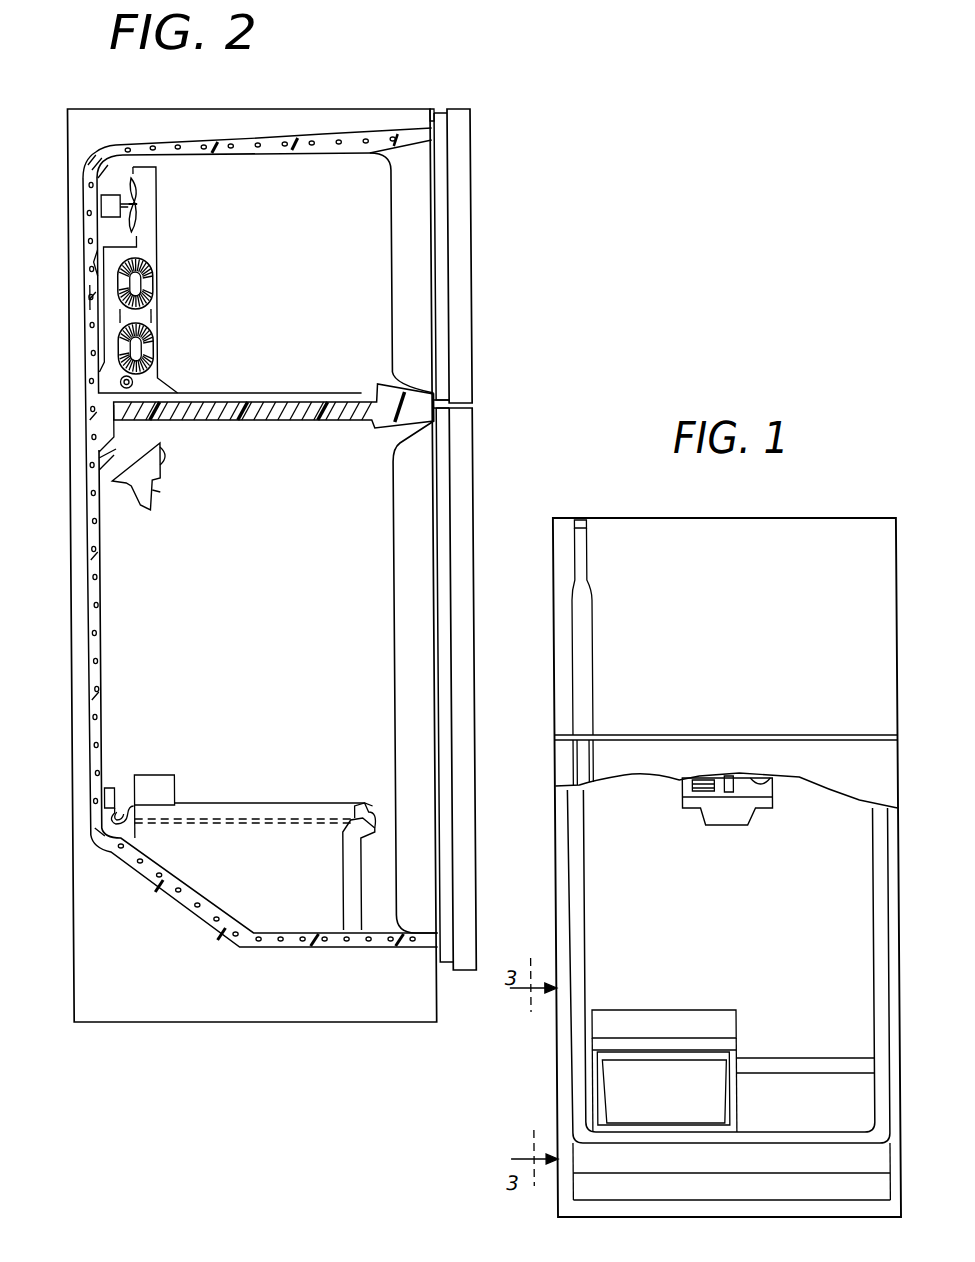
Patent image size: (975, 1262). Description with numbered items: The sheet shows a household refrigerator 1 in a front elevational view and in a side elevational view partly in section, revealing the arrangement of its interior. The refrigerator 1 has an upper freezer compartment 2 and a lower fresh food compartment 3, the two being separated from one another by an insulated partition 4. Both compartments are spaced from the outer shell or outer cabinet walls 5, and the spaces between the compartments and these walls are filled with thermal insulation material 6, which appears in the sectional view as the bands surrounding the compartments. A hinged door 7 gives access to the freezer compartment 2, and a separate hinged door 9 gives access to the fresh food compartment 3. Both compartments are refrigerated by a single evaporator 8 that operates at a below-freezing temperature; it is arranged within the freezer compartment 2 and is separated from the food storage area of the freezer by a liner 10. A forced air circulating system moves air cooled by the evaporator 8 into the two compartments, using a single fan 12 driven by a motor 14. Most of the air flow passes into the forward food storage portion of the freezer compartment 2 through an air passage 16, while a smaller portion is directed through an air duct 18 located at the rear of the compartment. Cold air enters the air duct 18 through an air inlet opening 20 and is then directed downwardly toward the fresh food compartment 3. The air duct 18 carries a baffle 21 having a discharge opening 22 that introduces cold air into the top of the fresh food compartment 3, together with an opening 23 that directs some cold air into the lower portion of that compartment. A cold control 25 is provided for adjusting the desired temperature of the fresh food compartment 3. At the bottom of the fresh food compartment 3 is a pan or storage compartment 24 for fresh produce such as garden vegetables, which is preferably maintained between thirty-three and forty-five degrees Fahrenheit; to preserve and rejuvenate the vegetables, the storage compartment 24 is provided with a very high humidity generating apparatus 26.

In FIG. 2, the household refrigerator 1 is at (374, 84).
In FIG. 1, the household refrigerator 1 is at (668, 508).
In FIG. 2, the freezer compartment 2 is at (292, 280).
In FIG. 2, the fresh food compartment 3 is at (277, 635).
In FIG. 1, the fresh food compartment 3 is at (734, 925).
In FIG. 2, the insulated partition 4 is at (290, 422).
In FIG. 2, the outer cabinet walls 5 is at (68, 402).
In FIG. 1, the outer cabinet walls 5 is at (559, 1068).
In FIG. 2, the thermal insulation material 6 is at (95, 540).
In FIG. 2, the hinged door 7 is at (473, 262).
In FIG. 1, the hinged door 7 is at (758, 535).
In FIG. 2, the evaporator 8 is at (158, 335).
In FIG. 2, the hinged door 9 is at (473, 462).
In FIG. 1, the hinged door 9 is at (883, 762).
In FIG. 2, the liner 10 is at (160, 228).
In FIG. 2, the fan 12 is at (143, 196).
In FIG. 2, the motor 14 is at (103, 205).
In FIG. 2, the air passage 16 is at (148, 166).
In FIG. 2, the air duct 18 is at (101, 297).
In FIG. 2, the air inlet opening 20 is at (97, 249).
In FIG. 2, the baffle 21 is at (143, 487).
In FIG. 2, the discharge opening 22 is at (160, 432).
In FIG. 1, the discharge opening 22 is at (685, 792).
In FIG. 2, the opening 23 is at (105, 488).
In FIG. 2, the storage compartment 24 is at (266, 792).
In FIG. 1, the storage compartment 24 is at (741, 1090).
In FIG. 2, the cold control 25 is at (168, 460).
In FIG. 1, the cold control 25 is at (728, 838).
In FIG. 2, the high humidity generating apparatus 26 is at (168, 776).
In FIG. 1, the high humidity generating apparatus 26 is at (645, 1010).